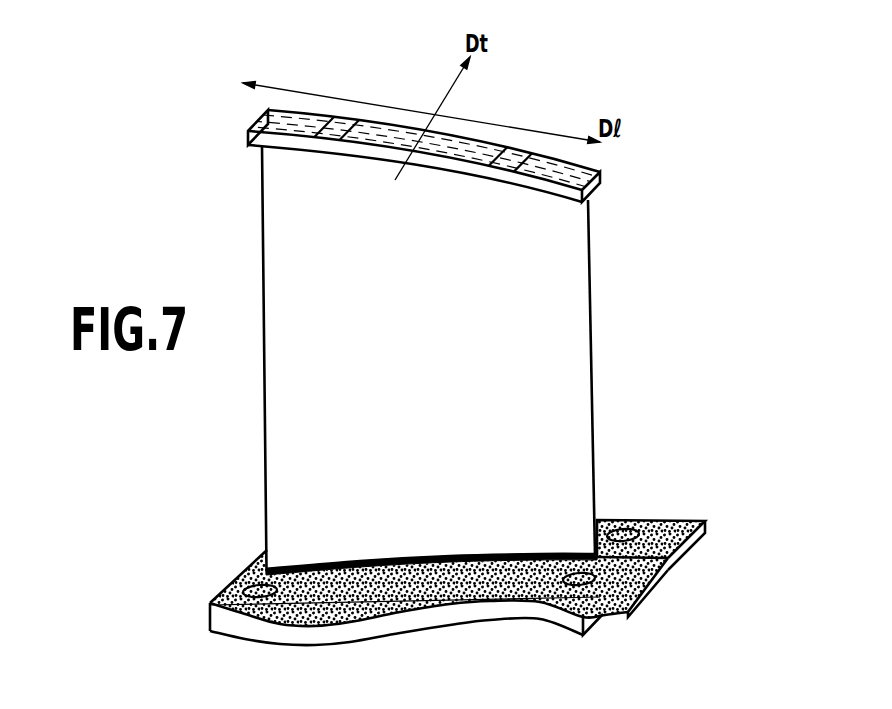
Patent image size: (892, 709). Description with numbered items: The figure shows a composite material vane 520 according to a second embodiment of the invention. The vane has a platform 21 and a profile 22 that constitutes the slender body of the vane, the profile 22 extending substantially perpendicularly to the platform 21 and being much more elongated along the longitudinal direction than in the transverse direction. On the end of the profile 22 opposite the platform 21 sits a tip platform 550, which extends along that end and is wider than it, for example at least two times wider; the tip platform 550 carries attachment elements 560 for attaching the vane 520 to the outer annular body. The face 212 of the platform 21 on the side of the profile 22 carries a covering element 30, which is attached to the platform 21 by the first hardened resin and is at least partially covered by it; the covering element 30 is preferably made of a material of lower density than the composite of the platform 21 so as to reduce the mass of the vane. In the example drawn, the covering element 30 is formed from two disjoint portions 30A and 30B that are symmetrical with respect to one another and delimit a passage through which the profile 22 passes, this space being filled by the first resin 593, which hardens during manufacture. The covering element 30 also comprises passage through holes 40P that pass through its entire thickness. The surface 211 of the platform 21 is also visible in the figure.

The profile 22 is at (292, 215).
The composite material vane 520 is at (603, 291).
The tip platform 550 is at (597, 166).
The attachment elements 560 is at (342, 127).
The covering element 30 is at (500, 562).
The disjoint portion 30A is at (638, 580).
The disjoint portion 30B is at (693, 558).
The first resin 593 is at (457, 558).
The passage through holes 40P is at (255, 585).
The platform 21 is at (373, 634).
The base lower surface 211 is at (477, 628).
The face of the platform 212 is at (247, 617).